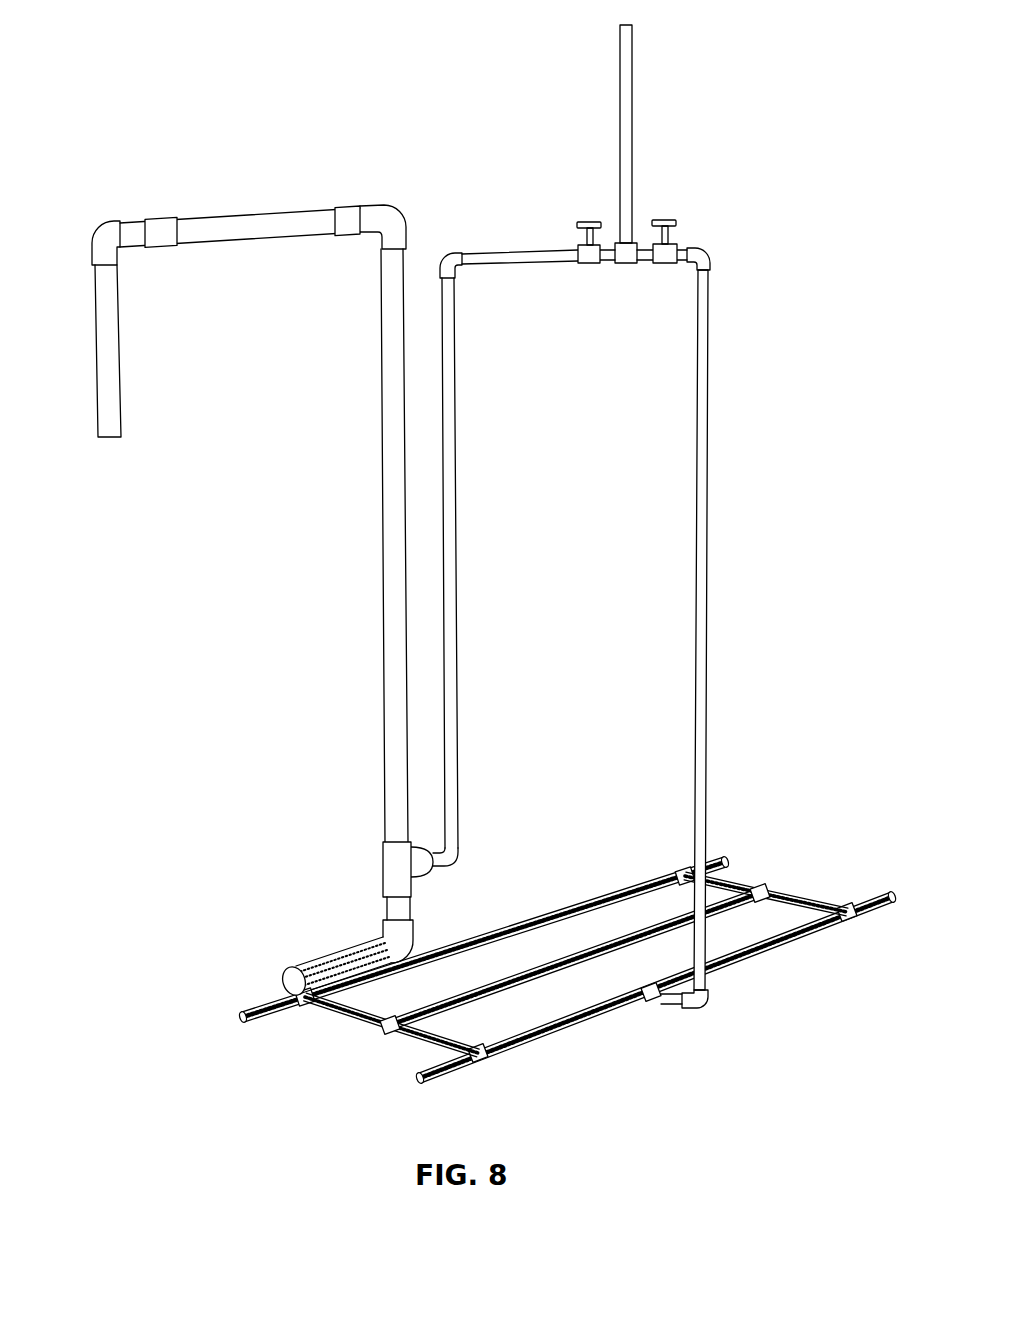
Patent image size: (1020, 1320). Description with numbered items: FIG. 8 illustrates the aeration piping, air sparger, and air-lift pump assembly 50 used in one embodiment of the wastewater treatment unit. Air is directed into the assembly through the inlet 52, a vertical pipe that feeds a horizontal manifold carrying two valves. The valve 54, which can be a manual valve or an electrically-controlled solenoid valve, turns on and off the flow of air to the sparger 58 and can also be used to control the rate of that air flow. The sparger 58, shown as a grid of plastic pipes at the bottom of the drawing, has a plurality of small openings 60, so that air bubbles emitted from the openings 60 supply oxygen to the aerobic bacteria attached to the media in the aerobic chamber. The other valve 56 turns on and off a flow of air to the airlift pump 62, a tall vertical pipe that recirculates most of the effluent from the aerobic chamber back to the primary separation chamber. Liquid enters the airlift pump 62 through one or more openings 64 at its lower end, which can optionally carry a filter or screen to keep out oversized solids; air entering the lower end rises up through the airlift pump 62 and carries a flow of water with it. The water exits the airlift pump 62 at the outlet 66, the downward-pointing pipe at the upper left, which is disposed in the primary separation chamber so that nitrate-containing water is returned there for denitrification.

The irrigation assembly 50 is at (487, 554).
The inlet 52 is at (627, 106).
The valve 54 is at (665, 263).
The valve 56 is at (590, 265).
The sparger 58 is at (495, 930).
The openings 60 is at (590, 1020).
The air-lift pump 62 is at (398, 813).
The openings 64 is at (335, 958).
The outlet 66 is at (110, 437).